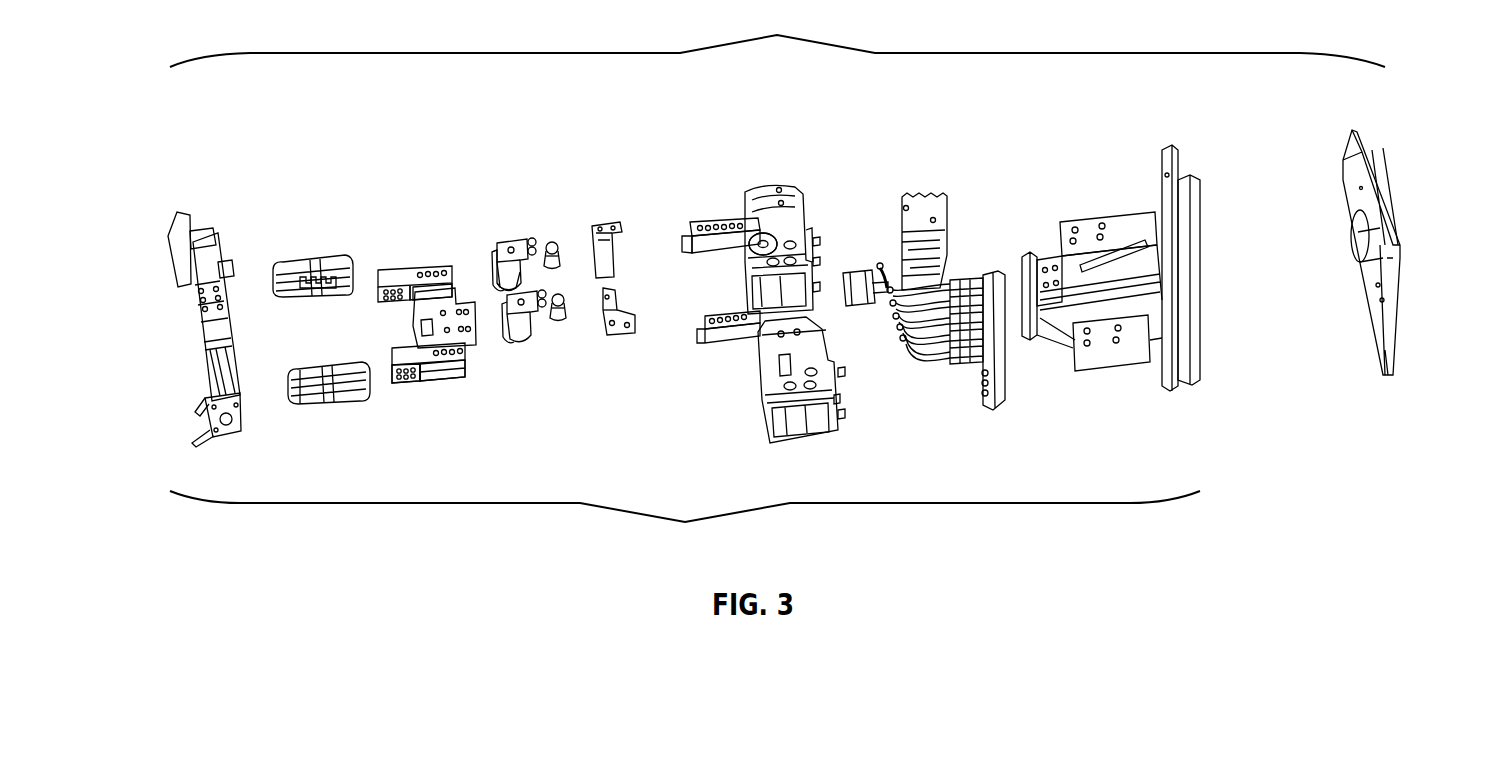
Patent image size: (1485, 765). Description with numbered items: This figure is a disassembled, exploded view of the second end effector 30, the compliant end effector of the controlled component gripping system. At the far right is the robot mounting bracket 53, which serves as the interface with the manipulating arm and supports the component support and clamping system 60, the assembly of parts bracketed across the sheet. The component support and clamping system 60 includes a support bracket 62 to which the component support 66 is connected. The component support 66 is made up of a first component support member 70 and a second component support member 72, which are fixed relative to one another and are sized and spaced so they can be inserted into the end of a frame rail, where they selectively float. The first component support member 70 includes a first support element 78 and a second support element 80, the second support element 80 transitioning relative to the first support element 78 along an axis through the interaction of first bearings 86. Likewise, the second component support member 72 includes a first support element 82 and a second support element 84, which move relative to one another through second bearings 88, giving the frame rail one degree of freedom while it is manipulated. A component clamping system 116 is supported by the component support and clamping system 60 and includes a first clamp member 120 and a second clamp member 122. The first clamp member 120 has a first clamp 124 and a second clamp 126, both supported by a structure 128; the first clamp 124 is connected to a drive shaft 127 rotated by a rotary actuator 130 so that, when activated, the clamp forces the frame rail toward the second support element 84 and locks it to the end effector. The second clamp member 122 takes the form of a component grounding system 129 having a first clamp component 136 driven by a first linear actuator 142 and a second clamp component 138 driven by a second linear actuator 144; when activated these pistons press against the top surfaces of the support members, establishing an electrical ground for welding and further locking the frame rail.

The second end effector 30 is at (777, 35).
The component support and clamping system 60 is at (685, 524).
The structure 128 is at (178, 283).
The second support element 80 is at (277, 258).
The second support element 84 is at (298, 402).
The component support 66 is at (399, 319).
The first support element 78 is at (395, 275).
The first bearings 86 is at (405, 283).
The first component support member 70 is at (388, 302).
The second component support member 72 is at (400, 393).
The first support element 82 is at (447, 374).
The second bearings 88 is at (390, 366).
The second clamp member 122 is at (523, 230).
The first linear actuator 142 is at (503, 275).
The second linear actuator 144 is at (517, 330).
The first clamp component 136 is at (553, 245).
The component grounding system 129 is at (532, 327).
The second clamp component 138 is at (566, 308).
The first clamp member 120 is at (708, 212).
The first clamp 124 is at (779, 188).
The drive shaft 127 is at (762, 246).
The second clamp 126 is at (760, 327).
The component clamping system 116 is at (828, 433).
The rotary actuator 130 is at (798, 287).
The support bracket 62 is at (1107, 357).
The robot mounting bracket 53 is at (1400, 288).